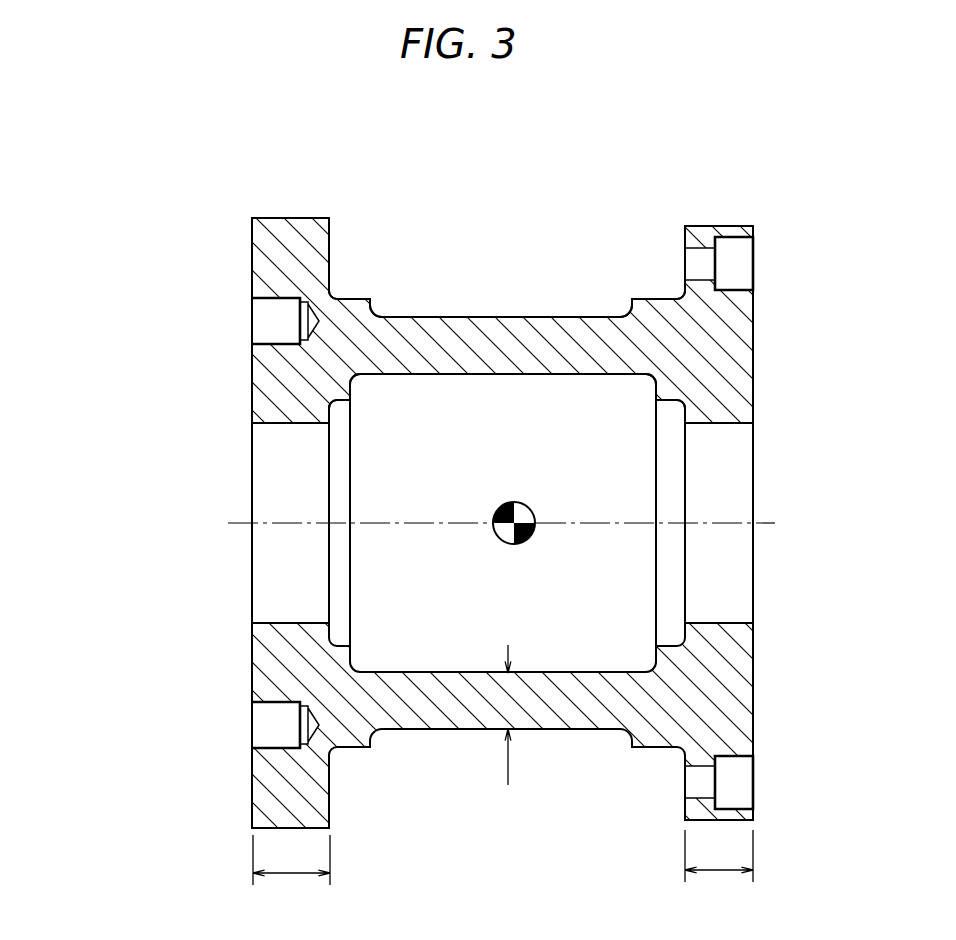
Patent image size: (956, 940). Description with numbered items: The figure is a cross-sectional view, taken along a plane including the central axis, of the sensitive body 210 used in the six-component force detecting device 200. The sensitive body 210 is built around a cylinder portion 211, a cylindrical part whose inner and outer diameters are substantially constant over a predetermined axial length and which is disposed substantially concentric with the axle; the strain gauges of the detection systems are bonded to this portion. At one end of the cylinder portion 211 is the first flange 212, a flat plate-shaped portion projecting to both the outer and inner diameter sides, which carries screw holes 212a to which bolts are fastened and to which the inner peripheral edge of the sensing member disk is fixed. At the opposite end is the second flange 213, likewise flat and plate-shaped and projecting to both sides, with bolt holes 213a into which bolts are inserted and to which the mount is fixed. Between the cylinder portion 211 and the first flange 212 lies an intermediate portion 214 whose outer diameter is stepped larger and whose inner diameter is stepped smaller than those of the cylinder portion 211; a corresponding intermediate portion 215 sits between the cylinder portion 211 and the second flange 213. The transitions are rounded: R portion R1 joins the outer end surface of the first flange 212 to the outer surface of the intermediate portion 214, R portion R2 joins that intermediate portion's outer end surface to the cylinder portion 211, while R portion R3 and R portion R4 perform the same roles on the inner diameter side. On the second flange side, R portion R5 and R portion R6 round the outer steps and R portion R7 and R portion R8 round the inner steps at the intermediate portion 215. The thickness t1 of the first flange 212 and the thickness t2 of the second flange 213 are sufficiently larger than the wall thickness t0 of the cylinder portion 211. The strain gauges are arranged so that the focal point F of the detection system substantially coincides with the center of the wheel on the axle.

The six-component force detecting device 200 is at (478, 510).
The sensitive body 210 is at (478, 510).
The cylinder portion 211 is at (487, 317).
The first flange 212 is at (287, 218).
The screw holes 212a is at (268, 298).
The second flange 213 is at (723, 227).
The bolt holes 213a is at (743, 242).
The intermediate portion 214 is at (346, 702).
The intermediate portion 215 is at (662, 693).
The R portion R1 is at (338, 281).
The R portion R2 is at (385, 302).
The R portion R3 is at (343, 411).
The R portion R4 is at (366, 383).
The R portion R5 is at (669, 287).
The R portion R6 is at (612, 310).
The R portion R7 is at (671, 415).
The R portion R8 is at (636, 388).
The focal point F is at (502, 532).
The wall thickness t0 is at (521, 715).
The thickness t1 is at (291, 869).
The thickness t2 is at (719, 873).